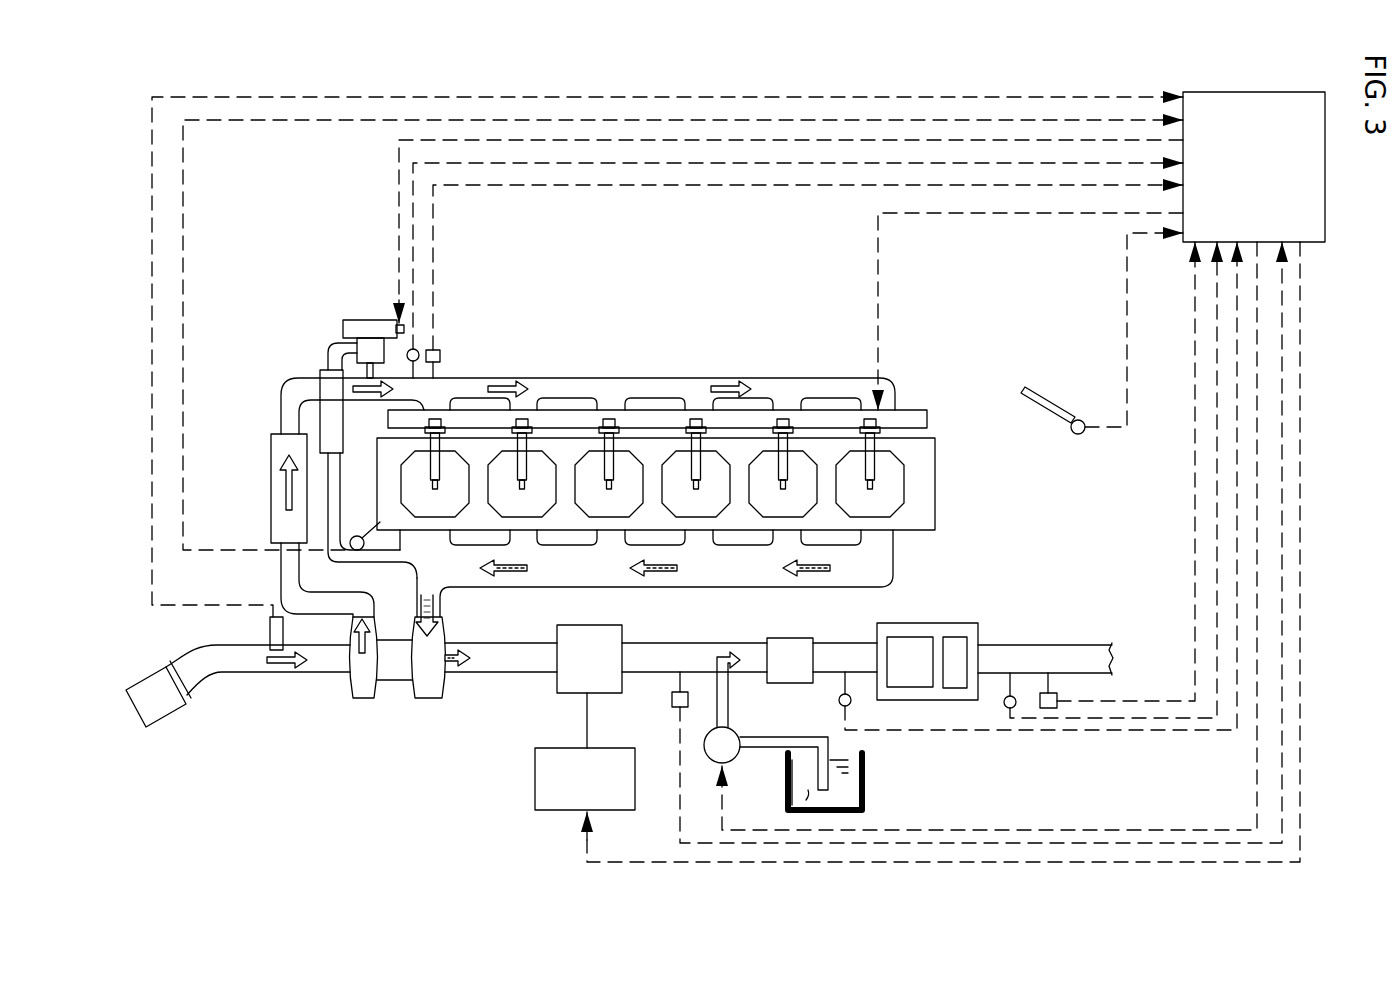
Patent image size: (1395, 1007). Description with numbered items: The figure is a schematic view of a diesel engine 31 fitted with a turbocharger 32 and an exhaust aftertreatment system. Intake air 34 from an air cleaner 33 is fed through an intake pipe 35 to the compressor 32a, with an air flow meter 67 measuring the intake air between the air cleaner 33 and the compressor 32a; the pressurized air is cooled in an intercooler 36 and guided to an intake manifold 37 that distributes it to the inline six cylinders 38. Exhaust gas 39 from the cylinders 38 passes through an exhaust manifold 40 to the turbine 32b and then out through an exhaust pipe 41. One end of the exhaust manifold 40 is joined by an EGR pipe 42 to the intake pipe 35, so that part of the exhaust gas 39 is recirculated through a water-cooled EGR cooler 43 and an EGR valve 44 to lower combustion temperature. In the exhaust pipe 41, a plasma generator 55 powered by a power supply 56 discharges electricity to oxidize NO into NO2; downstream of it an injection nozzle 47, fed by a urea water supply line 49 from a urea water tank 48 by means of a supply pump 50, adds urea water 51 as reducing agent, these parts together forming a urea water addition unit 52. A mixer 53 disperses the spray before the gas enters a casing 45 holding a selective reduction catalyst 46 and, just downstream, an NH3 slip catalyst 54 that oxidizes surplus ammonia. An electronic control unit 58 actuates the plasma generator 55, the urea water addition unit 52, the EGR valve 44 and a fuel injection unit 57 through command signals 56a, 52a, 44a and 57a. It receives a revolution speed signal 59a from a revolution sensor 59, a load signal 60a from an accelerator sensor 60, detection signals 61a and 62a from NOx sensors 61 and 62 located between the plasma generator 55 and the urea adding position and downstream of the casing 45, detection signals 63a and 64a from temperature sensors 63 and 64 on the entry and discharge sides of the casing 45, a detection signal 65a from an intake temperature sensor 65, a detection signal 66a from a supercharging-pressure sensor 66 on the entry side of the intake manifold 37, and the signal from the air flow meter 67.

The engine 31 is at (670, 368).
The turbocharger 32 is at (408, 718).
The compressor 32a is at (363, 692).
The turbine 32b is at (438, 692).
The air cleaner 33 is at (170, 712).
The intake air 34 is at (283, 665).
The intake pipe 35 is at (243, 676).
The intercooler 36 is at (272, 462).
The intake manifold 37 is at (582, 378).
The cylinders 38 is at (810, 493).
The exhaust gas 39 is at (512, 575).
The exhaust manifold 40 is at (862, 596).
The exhaust pipe 41 is at (527, 675).
The EGR pipe 42 is at (340, 505).
The EGR cooler 43 is at (325, 368).
The EGR valve 44 is at (372, 320).
The command signal 44a is at (399, 205).
The casing 45 is at (945, 625).
The selective reduction catalyst 46 is at (910, 640).
The injection nozzle 47 is at (722, 655).
The urea water tank 48 is at (785, 773).
The urea water supply line 49 is at (790, 740).
The supply pump 50 is at (737, 730).
The urea water 51 is at (807, 793).
The urea water addition unit 52 is at (870, 780).
The command signal 52a is at (1145, 830).
The mixer 53 is at (783, 648).
The NH3 slip catalyst 54 is at (960, 648).
The plasma generator 55 is at (605, 640).
The power supply 56 is at (535, 765).
The command signal 56a is at (655, 862).
The fuel injection unit 57 is at (900, 392).
The command signal 57a is at (880, 262).
The electronic control unit 58 is at (1275, 186).
The revolution sensor 59 is at (365, 553).
The revolution speed signal 59a is at (183, 215).
The accelerator sensor 60 is at (1042, 405).
The load signal 60a is at (1127, 335).
The NOx sensor 61 is at (672, 698).
The detection signal 61a is at (1282, 482).
The NOx sensor 62 is at (1058, 712).
The detection signal 62a is at (1195, 593).
The temperature sensor 63 is at (852, 705).
The detection signal 63a is at (1237, 510).
The temperature sensor 64 is at (1005, 710).
The detection signal 64a is at (1217, 565).
The temperature sensor 65 is at (418, 349).
The detection signal 65a is at (478, 163).
The supercharging-pressure sensor 66 is at (442, 355).
The detection signal 66a is at (712, 188).
The air flow meter 67 is at (270, 628).